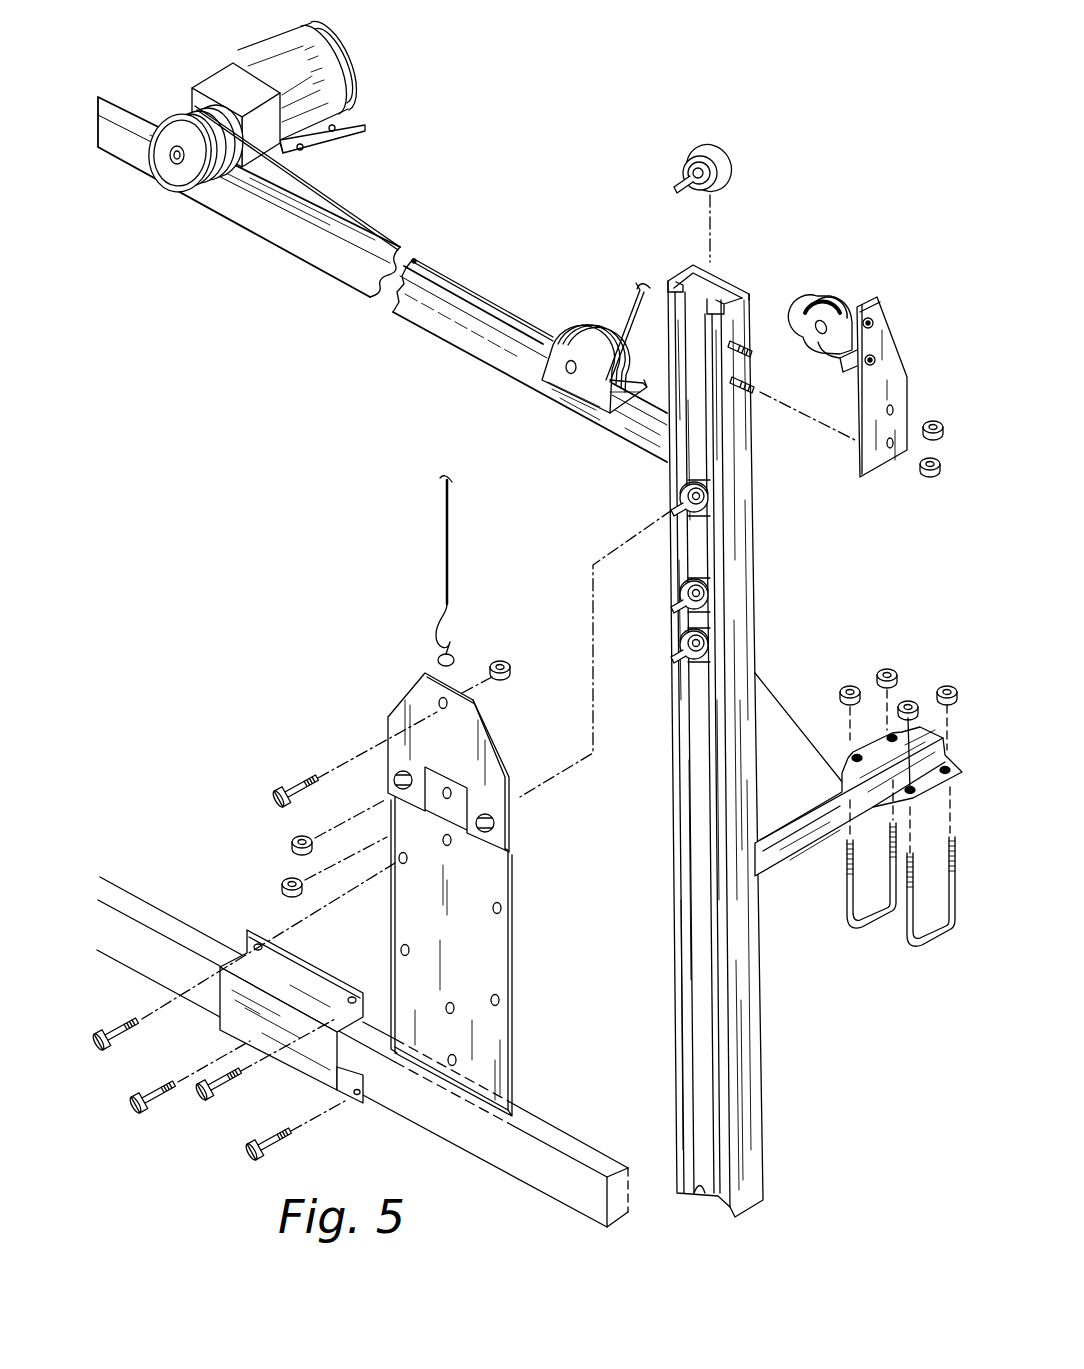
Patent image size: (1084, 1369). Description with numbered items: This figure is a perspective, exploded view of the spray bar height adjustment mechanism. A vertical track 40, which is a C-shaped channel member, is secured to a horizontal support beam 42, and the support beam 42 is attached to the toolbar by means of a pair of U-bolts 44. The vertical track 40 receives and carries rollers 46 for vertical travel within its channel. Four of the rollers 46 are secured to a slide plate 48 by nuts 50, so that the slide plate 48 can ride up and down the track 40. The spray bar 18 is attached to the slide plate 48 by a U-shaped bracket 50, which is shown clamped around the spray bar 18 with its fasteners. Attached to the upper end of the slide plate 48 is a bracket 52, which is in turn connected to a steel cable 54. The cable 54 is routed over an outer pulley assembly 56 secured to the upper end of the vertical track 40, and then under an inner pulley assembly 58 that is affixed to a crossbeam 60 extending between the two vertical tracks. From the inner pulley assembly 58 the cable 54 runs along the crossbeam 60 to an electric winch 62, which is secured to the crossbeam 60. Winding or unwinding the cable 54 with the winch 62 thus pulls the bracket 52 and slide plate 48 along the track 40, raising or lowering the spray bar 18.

The spray bar 18 is at (418, 1126).
The vertical track 40 is at (756, 553).
The horizontal support beam 42 is at (803, 838).
The U-bolts 44 is at (934, 940).
The rollers 46 is at (730, 152).
The slide plate 48 is at (513, 875).
The nuts / U-shaped bracket 50 is at (292, 836).
The bracket 52 is at (403, 703).
The steel cable 54 is at (140, 138).
The outer pulley assembly 56 is at (882, 322).
The inner pulley assembly 58 is at (583, 333).
The crossbeam 60 is at (432, 333).
The electric winch 62 is at (352, 52).